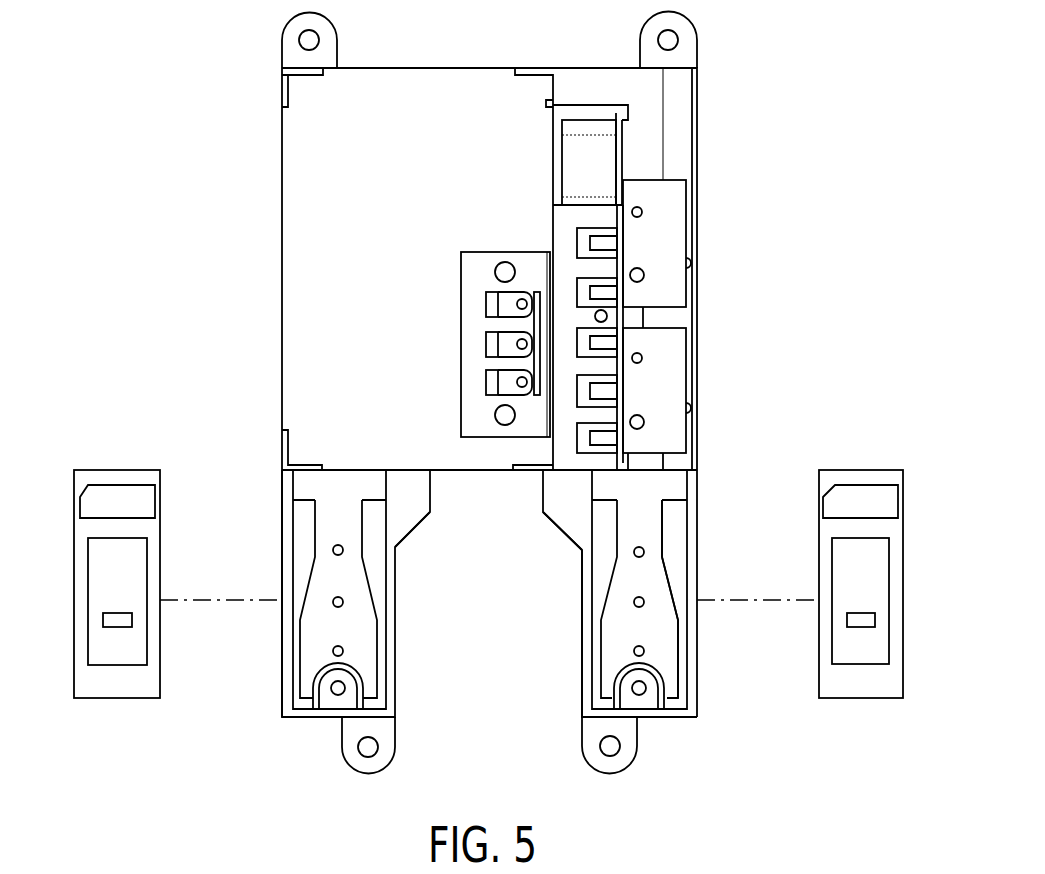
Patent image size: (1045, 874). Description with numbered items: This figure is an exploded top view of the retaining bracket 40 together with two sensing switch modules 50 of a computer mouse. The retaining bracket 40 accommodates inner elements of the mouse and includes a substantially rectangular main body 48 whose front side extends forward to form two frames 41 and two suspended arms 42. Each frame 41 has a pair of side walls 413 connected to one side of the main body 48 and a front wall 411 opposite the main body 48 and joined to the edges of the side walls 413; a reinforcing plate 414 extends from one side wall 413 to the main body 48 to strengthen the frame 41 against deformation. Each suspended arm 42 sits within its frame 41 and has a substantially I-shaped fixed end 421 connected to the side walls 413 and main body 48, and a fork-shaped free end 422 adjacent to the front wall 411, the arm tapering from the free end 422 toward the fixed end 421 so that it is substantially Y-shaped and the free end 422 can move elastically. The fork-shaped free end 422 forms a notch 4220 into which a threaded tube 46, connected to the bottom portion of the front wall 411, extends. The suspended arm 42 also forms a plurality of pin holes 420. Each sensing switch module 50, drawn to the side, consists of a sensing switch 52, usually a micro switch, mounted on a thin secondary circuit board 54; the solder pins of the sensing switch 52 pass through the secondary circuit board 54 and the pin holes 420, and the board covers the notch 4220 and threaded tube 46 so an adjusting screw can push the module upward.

The retaining bracket 40 is at (708, 89).
The main body 48 is at (698, 143).
The frame 41 is at (271, 477).
The front wall 411 is at (650, 715).
The side wall 413 is at (580, 685).
The reinforcing plate 414 is at (400, 520).
The suspended arm 42 is at (318, 583).
The pin hole 420 is at (657, 552).
The fixed end 421 is at (647, 492).
The free end 422 is at (670, 662).
The notch 4220 is at (365, 663).
The threaded tube 46 is at (325, 689).
The sensing switch module 50 is at (118, 456).
The sensing switch 52 is at (105, 567).
The secondary circuit board 54 is at (73, 625).